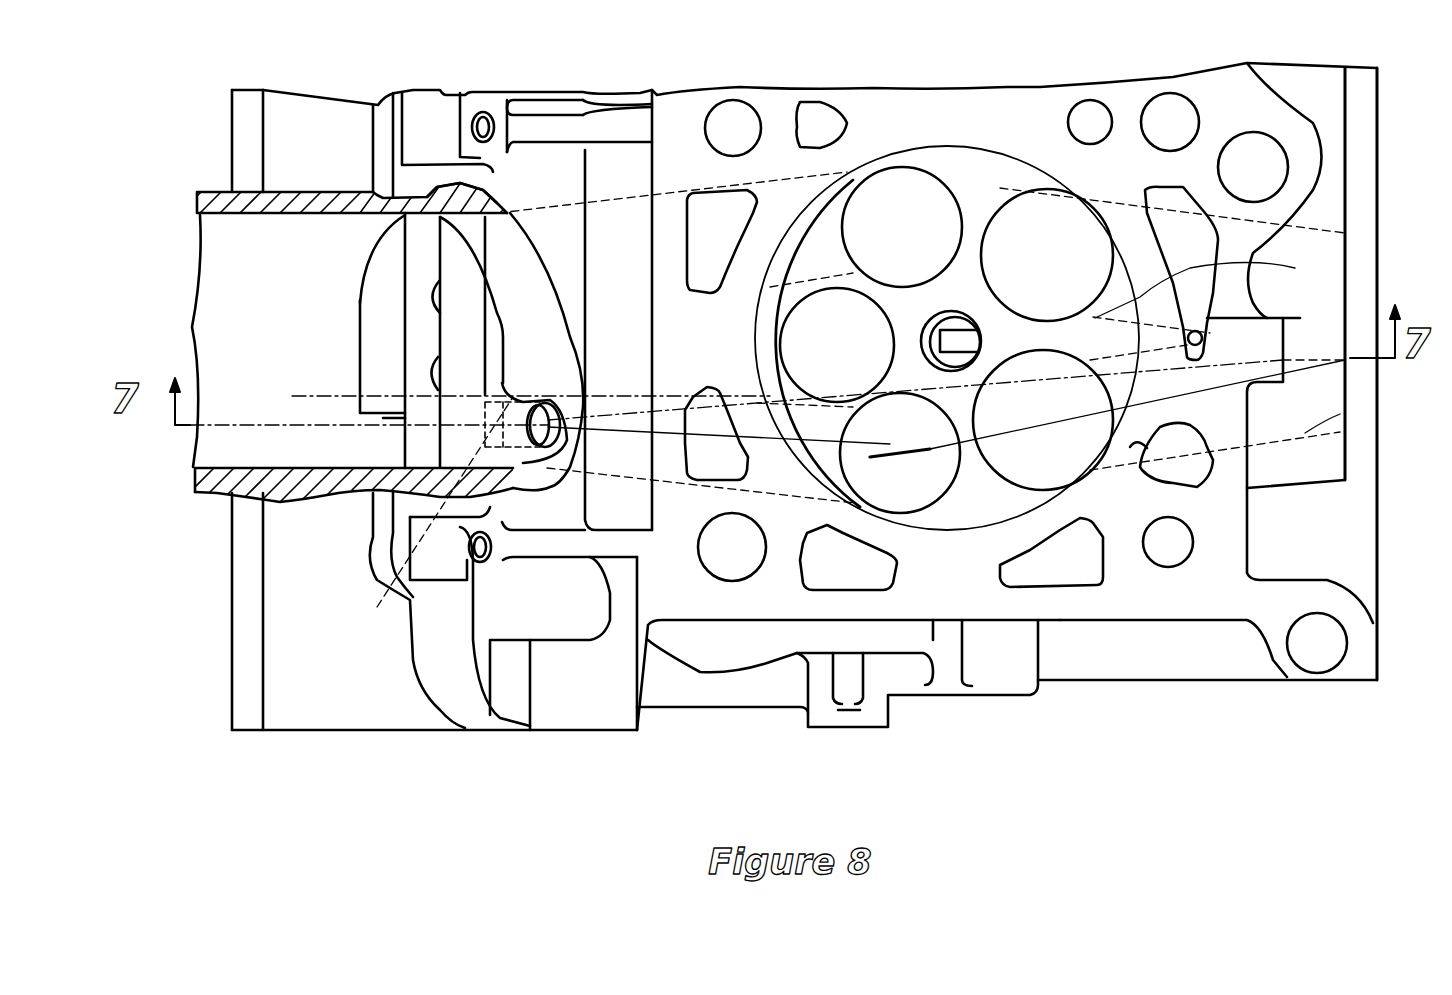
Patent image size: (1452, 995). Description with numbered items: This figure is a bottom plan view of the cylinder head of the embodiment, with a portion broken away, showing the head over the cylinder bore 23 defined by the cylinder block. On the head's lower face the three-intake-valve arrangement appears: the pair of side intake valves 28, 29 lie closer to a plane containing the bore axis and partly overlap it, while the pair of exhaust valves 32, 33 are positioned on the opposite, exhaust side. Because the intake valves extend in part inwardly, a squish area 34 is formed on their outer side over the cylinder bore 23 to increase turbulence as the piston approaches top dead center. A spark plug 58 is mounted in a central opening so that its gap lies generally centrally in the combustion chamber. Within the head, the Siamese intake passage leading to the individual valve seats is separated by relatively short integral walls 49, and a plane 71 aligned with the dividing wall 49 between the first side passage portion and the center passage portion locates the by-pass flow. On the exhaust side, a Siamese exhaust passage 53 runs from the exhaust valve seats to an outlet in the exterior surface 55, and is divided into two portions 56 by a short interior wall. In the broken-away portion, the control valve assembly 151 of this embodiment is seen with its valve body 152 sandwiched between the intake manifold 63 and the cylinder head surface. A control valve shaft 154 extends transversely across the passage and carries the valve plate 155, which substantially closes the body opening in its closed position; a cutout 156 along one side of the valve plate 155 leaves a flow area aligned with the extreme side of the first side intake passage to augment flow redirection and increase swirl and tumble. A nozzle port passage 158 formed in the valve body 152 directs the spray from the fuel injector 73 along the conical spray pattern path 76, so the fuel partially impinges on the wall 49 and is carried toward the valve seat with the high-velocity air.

The cylinder bore 23 is at (1209, 291).
The side intake valve 28 is at (910, 497).
The side intake valve 29 is at (905, 178).
The exhaust valve 32 is at (1063, 470).
The exhaust valve 33 is at (1037, 200).
The squish area 34 is at (770, 305).
The wall 49 is at (777, 370).
The exhaust passage 53 is at (1340, 414).
The exterior surface 55 is at (1378, 537).
The exhaust passage portion 56 is at (1167, 213).
The spark plug 58 is at (960, 320).
The intake manifold 63 is at (213, 500).
The plane 71 is at (323, 397).
The fuel injector 73 is at (429, 516).
The conical spray pattern path 76 is at (873, 445).
The control valve assembly 151 is at (357, 177).
The valve body 152 is at (455, 205).
The control valve shaft 154 is at (420, 240).
The valve plate 155 is at (358, 303).
The cutout 156 is at (383, 418).
The nozzle port passage 158 is at (545, 440).